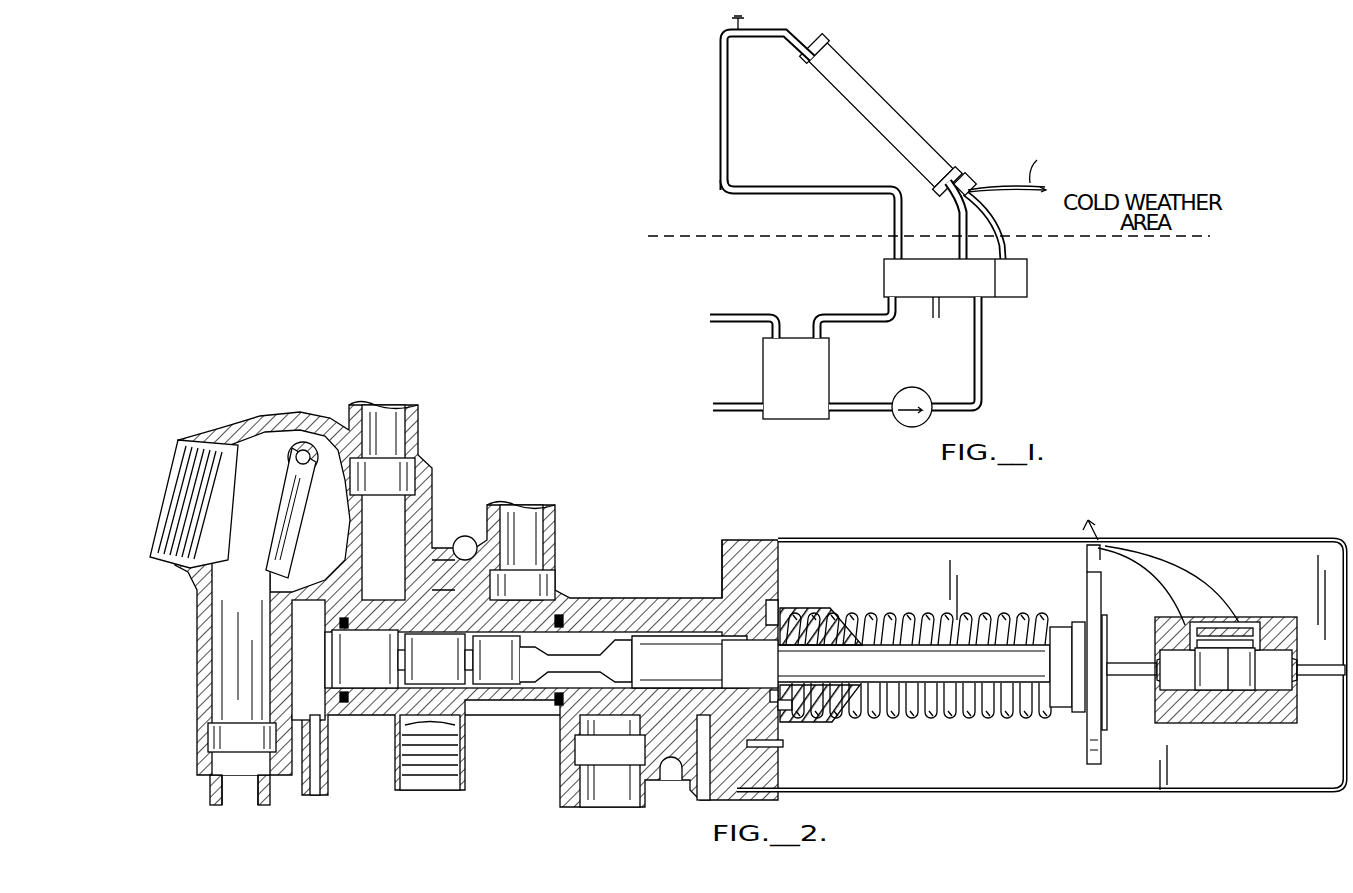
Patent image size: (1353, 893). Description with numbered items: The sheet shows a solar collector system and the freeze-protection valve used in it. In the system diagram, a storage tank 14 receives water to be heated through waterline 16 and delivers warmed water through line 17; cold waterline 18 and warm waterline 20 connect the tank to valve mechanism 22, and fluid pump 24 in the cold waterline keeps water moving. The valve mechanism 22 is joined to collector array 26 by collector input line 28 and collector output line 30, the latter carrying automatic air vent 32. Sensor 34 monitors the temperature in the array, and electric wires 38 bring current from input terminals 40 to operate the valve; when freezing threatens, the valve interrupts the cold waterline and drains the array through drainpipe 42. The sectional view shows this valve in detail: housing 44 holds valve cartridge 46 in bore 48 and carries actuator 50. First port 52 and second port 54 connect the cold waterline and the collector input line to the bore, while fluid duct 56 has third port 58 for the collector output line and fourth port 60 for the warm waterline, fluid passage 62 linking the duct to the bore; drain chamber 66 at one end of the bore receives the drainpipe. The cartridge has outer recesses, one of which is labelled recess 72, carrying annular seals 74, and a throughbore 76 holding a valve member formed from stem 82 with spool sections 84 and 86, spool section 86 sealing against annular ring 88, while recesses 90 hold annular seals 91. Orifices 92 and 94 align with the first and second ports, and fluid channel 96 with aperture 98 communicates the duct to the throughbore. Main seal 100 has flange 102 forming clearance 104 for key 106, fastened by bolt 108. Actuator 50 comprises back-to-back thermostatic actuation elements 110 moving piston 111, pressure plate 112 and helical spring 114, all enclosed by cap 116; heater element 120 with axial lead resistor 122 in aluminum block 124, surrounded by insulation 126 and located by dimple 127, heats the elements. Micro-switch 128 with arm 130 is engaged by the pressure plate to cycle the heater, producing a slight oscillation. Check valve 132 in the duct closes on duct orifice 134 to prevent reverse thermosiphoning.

In FIG. 1, the storage tank 14 is at (806, 389).
In FIG. 1, the waterline 16 is at (729, 400).
In FIG. 1, the line 17 is at (738, 310).
In FIG. 1, the cold waterline 18 is at (984, 378).
In FIG. 2, the cold waterline 18 is at (568, 795).
In FIG. 1, the warm waterline 20 is at (852, 312).
In FIG. 2, the warm waterline 20 is at (208, 795).
In FIG. 1, the valve mechanism 22 is at (960, 284).
In FIG. 2, the valve mechanism 22 is at (628, 501).
In FIG. 1, the fluid pump 24 is at (914, 386).
In FIG. 1, the collector array 26 is at (890, 96).
In FIG. 1, the collector input line 28 is at (958, 218).
In FIG. 2, the collector input line 28 is at (478, 520).
In FIG. 1, the collector output line 30 is at (720, 126).
In FIG. 2, the collector output line 30 is at (418, 420).
In FIG. 1, the automatic air vent 32 is at (744, 18).
In FIG. 1, the sensor 34 is at (968, 178).
In FIG. 1, the electric wires 38 is at (992, 215).
In FIG. 2, the electric wires 38 is at (1090, 520).
In FIG. 1, the input terminals 40 is at (1018, 169).
In FIG. 1, the drainpipe 42 is at (941, 312).
In FIG. 2, the drainpipe 42 is at (332, 790).
In FIG. 2, the housing 44 is at (590, 605).
In FIG. 2, the valve cartridge 46 is at (735, 580).
In FIG. 2, the bore 48 is at (676, 610).
In FIG. 2, the actuator 50 is at (884, 526).
In FIG. 2, the first port 52 is at (572, 780).
In FIG. 2, the second port 54 is at (560, 560).
In FIG. 2, the fluid duct 56 is at (238, 656).
In FIG. 2, the third port 58 is at (420, 462).
In FIG. 2, the fourth port 60 is at (205, 738).
In FIG. 2, the fluid passage 62 is at (410, 560).
In FIG. 2, the drain chamber 66 is at (320, 664).
In FIG. 2, the port 72 is at (568, 720).
In FIG. 2, the annular seals 74 is at (560, 750).
In FIG. 2, the throughbore 76 is at (636, 610).
In FIG. 2, the stem 82 is at (446, 664).
In FIG. 2, the spool section 84 is at (378, 664).
In FIG. 2, the spool section 86 is at (508, 664).
In FIG. 2, the annular ring 88 is at (482, 715).
In FIG. 2, the circumferential recesses 90 is at (375, 700).
In FIG. 2, the annular seal 91 is at (565, 698).
In FIG. 2, the orifice 92 is at (655, 783).
In FIG. 2, the orifice 94 is at (515, 610).
In FIG. 2, the fluid channel 96 is at (463, 541).
In FIG. 2, the aperture 98 is at (398, 770).
In FIG. 2, the main seal 100 is at (778, 582).
In FIG. 2, the flange 102 is at (783, 606).
In FIG. 2, the clearance 104 is at (790, 712).
In FIG. 2, the key 106 is at (788, 735).
In FIG. 2, the bolt 108 is at (786, 750).
In FIG. 2, the thermostatic actuation element 110 is at (1212, 690).
In FIG. 2, the piston 111 is at (1132, 660).
In FIG. 2, the pressure plate 112 is at (1101, 742).
In FIG. 2, the helical spring 114 is at (988, 718).
In FIG. 2, the cap 116 is at (1180, 793).
In FIG. 2, the heater element 120 is at (1240, 632).
In FIG. 2, the axial lead resistor 122 is at (1200, 628).
In FIG. 2, the aluminum block 124 is at (1240, 690).
In FIG. 2, the insulation 126 is at (1290, 722).
In FIG. 2, the dimple 127 is at (1345, 700).
In FIG. 2, the micro-switch 128 is at (1104, 540).
In FIG. 2, the arm 130 is at (1085, 577).
In FIG. 2, the check valve 132 is at (250, 448).
In FIG. 2, the duct orifice 134 is at (310, 548).